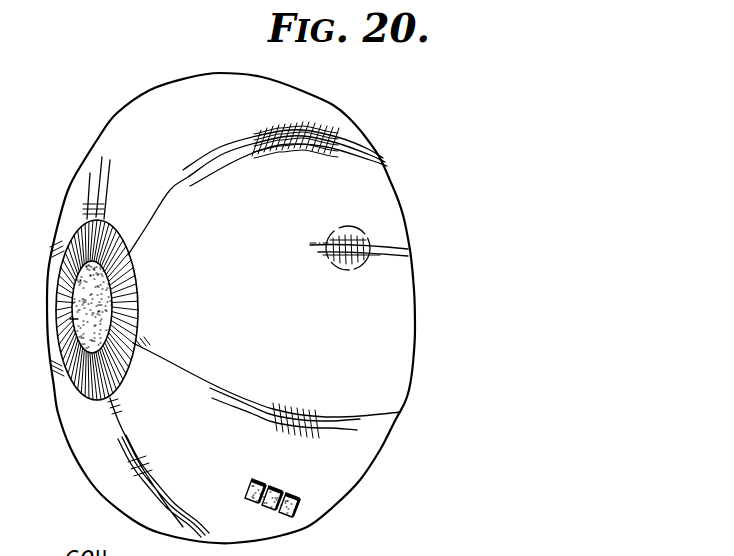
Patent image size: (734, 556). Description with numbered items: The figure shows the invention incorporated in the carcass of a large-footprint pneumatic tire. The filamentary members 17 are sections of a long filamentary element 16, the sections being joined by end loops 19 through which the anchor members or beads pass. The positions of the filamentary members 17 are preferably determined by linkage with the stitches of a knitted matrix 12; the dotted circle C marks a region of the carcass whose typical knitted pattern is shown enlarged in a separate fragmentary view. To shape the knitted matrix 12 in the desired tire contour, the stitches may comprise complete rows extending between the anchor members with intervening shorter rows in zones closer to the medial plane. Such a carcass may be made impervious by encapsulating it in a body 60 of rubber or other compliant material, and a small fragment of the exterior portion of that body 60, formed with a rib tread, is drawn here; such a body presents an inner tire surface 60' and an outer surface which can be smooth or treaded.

The knitted matrix 12 is at (325, 142).
The filamentary element 16 is at (121, 265).
The filamentary members 17 is at (130, 298).
The end loops 19 is at (64, 294).
The body of rubber or other compliant material 60 is at (290, 484).
The inner tire surface 60' is at (41, 325).
The dotted circle C is at (330, 263).